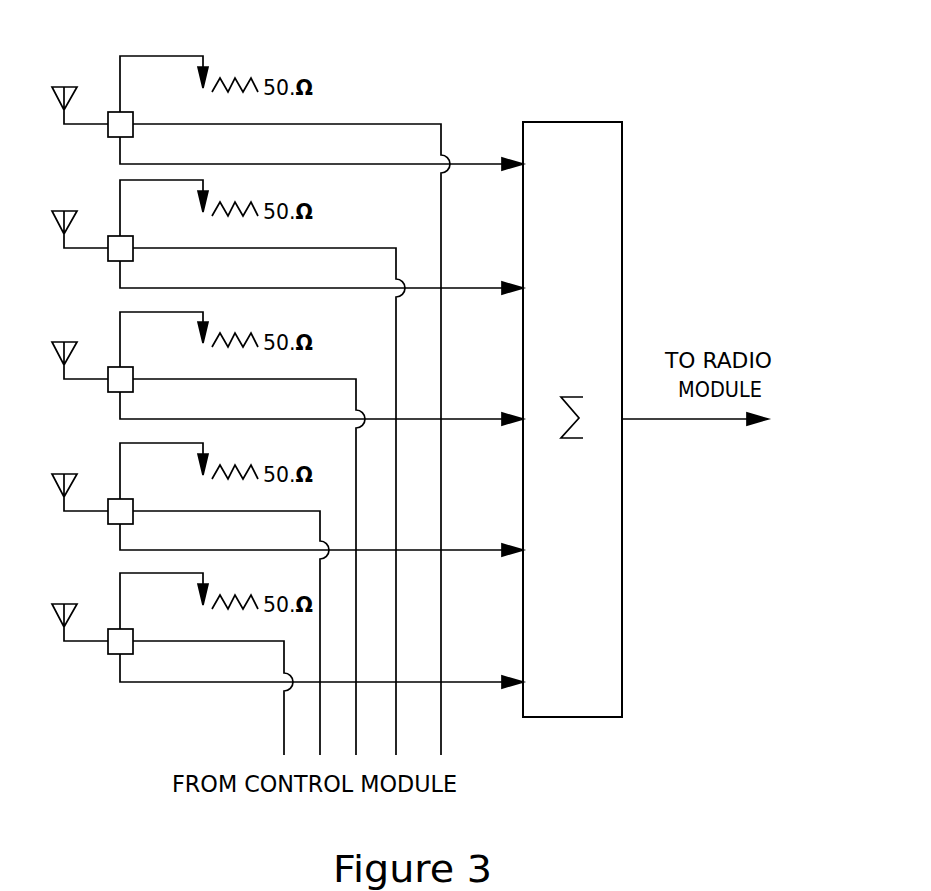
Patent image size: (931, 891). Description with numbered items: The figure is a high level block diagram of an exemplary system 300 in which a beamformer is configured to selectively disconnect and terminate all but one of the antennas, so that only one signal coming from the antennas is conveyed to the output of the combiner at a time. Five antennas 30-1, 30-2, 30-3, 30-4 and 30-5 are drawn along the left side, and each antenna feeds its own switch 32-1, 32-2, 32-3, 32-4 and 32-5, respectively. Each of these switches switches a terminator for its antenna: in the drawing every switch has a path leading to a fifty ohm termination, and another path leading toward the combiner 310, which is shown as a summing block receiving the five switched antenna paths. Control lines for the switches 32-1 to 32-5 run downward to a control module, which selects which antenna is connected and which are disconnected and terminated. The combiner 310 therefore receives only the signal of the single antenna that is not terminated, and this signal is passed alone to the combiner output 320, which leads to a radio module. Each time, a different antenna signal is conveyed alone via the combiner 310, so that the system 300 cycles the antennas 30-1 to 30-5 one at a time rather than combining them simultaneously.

The antenna 30-1 is at (54, 100).
The antenna 30-2 is at (54, 224).
The antenna 30-3 is at (54, 355).
The antenna 30-4 is at (54, 486).
The antenna 30-5 is at (54, 618).
The switch 32-1 is at (134, 129).
The switch 32-2 is at (134, 253).
The switch 32-3 is at (134, 384).
The switch 32-4 is at (134, 516).
The switch 32-5 is at (134, 646).
The combiner 310 is at (602, 122).
The output to radio module 320 is at (768, 420).
The system 300 is at (712, 636).